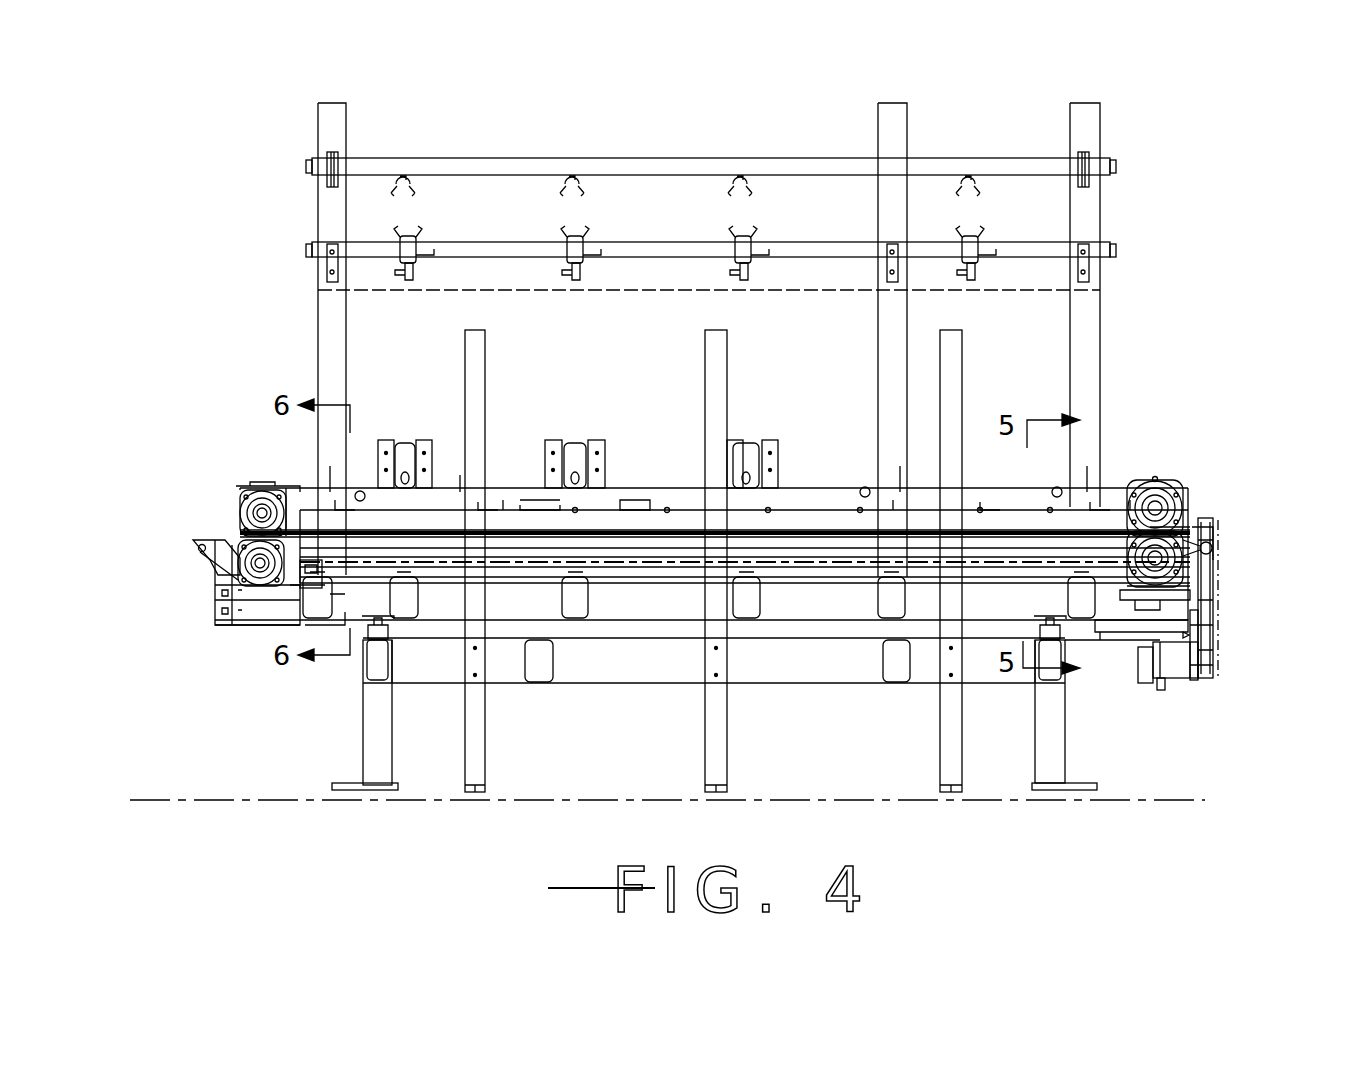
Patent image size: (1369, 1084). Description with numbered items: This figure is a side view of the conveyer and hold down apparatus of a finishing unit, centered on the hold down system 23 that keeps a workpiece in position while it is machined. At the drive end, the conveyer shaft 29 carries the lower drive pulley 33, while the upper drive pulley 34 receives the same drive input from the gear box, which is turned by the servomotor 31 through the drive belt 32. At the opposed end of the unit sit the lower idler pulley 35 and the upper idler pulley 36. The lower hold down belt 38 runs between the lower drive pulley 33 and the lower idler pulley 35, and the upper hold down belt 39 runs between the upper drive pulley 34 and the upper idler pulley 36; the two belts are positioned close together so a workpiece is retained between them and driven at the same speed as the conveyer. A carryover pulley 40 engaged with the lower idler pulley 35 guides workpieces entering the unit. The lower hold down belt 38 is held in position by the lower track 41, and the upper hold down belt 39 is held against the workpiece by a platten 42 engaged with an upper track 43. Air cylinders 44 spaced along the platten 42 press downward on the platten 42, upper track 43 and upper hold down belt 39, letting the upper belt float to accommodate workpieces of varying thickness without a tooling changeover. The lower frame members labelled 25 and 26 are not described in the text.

The hold down system 23 is at (1230, 466).
The lower frame beam 25 is at (760, 670).
The frame end member 26 is at (1135, 617).
The conveyer shaft 29 is at (1215, 578).
The servomotor 31 is at (1179, 670).
The drive belt 32 is at (1212, 630).
The lower drive pulley 33 is at (1213, 548).
The upper drive pulley 34 is at (1160, 505).
The lower idler pulley 35 is at (218, 575).
The upper idler pulley 36 is at (240, 503).
The lower hold down belt 38 is at (280, 570).
The upper hold down belt 39 is at (294, 504).
The carryover pulley 40 is at (230, 541).
The lower track 41 is at (311, 578).
The platten 42 is at (530, 500).
The upper track 43 is at (634, 500).
The air cylinders 44 is at (497, 500).